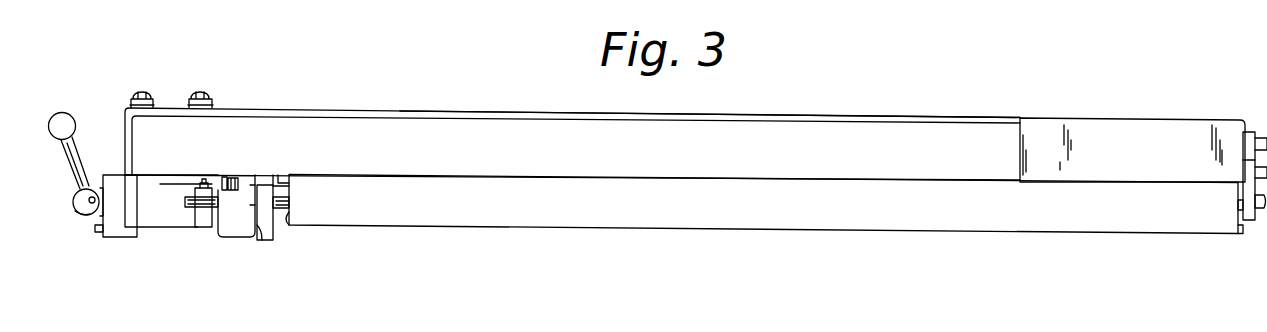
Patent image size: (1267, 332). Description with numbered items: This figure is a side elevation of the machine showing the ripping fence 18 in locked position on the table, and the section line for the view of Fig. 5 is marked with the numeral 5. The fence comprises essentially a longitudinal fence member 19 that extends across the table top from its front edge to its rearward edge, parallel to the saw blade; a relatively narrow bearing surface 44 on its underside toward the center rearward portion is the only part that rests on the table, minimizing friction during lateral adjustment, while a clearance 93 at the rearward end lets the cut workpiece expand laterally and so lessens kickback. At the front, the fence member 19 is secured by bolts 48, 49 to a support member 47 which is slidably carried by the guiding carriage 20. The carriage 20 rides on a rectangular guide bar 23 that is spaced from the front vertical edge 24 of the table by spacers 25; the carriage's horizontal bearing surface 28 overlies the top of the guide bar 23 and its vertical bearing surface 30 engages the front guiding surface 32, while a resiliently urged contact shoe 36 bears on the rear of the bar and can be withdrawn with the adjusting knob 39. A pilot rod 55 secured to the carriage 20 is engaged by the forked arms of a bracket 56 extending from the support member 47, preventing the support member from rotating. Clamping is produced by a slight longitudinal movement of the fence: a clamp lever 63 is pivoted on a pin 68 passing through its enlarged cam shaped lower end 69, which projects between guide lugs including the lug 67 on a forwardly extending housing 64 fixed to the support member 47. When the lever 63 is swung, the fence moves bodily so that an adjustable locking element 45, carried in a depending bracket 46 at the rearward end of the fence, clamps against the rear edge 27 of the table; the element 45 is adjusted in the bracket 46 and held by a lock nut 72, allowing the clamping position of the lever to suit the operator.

The ripping fence 18 is at (259, 100).
The fence member 19 is at (862, 115).
The clearance 93 is at (1040, 140).
The bearing surface 44 is at (738, 178).
The bolt 48 is at (143, 98).
The bolt 49 is at (200, 98).
The clamp lever 63 is at (70, 140).
The pin 68 is at (92, 197).
The cam shaped lower end 69 is at (74, 206).
The guide lug 67 is at (85, 213).
The housing 64 is at (112, 232).
The support member 47 is at (136, 180).
The adjusting knob 39 is at (225, 178).
The guiding carriage 20 is at (250, 178).
The contact shoe 36 is at (278, 182).
The pilot rod 55 is at (185, 202).
The bracket 56 is at (198, 219).
The horizontal bearing surface 28 is at (254, 193).
The vertical bearing surface 30 is at (258, 207).
The guide bar 23 is at (262, 236).
The front guiding surface 32 is at (268, 241).
The front vertical edge 24 is at (290, 218).
The spacer 25 is at (285, 203).
The bracket 46 is at (1252, 172).
The locking element 45 is at (1240, 205).
The rear edge 27 is at (1240, 236).
The lock nut 72 is at (1262, 222).
The section line 5- 5 is at (192, 180).